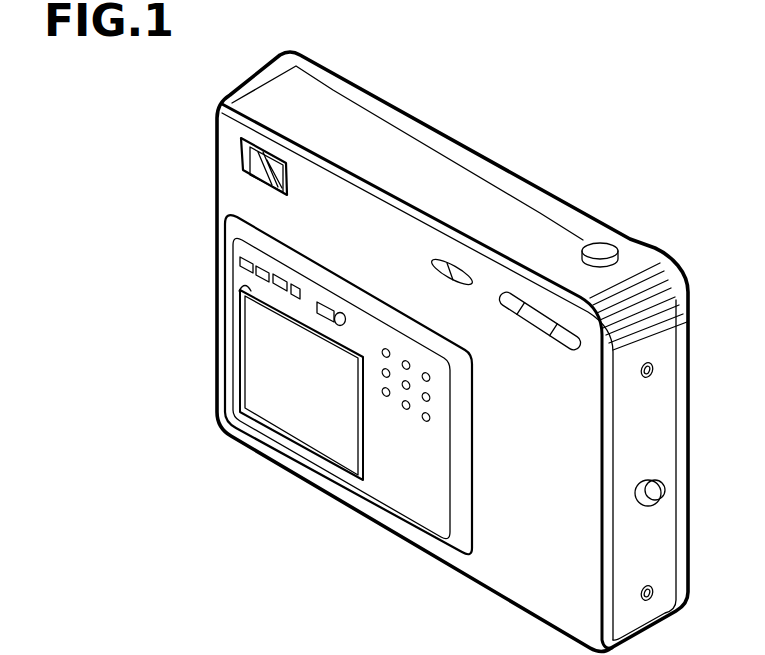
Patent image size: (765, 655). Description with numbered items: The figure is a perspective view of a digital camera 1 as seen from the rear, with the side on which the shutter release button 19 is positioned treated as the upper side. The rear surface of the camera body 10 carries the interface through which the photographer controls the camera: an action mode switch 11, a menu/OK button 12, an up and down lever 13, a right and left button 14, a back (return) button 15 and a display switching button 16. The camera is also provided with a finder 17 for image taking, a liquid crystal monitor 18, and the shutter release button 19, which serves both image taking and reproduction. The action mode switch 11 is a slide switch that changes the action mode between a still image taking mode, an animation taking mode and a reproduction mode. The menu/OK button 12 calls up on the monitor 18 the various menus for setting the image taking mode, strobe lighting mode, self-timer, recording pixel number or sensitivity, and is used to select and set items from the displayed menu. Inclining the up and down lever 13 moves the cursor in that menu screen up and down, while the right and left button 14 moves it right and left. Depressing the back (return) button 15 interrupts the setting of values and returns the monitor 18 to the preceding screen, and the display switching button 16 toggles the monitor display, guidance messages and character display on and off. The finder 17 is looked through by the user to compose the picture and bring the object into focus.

The digital camera 1 is at (502, 108).
The camera body 10 is at (522, 190).
The action mode switch 11 is at (321, 320).
The menu/OK button 12 is at (273, 295).
The up and down lever 13 is at (540, 313).
The right and left button 14 is at (513, 303).
The back (return) button 15 is at (241, 289).
The display switching button 16 is at (240, 262).
The finder 17 is at (240, 141).
The liquid crystal monitor 18 is at (263, 388).
The shutter release button 19 is at (600, 253).